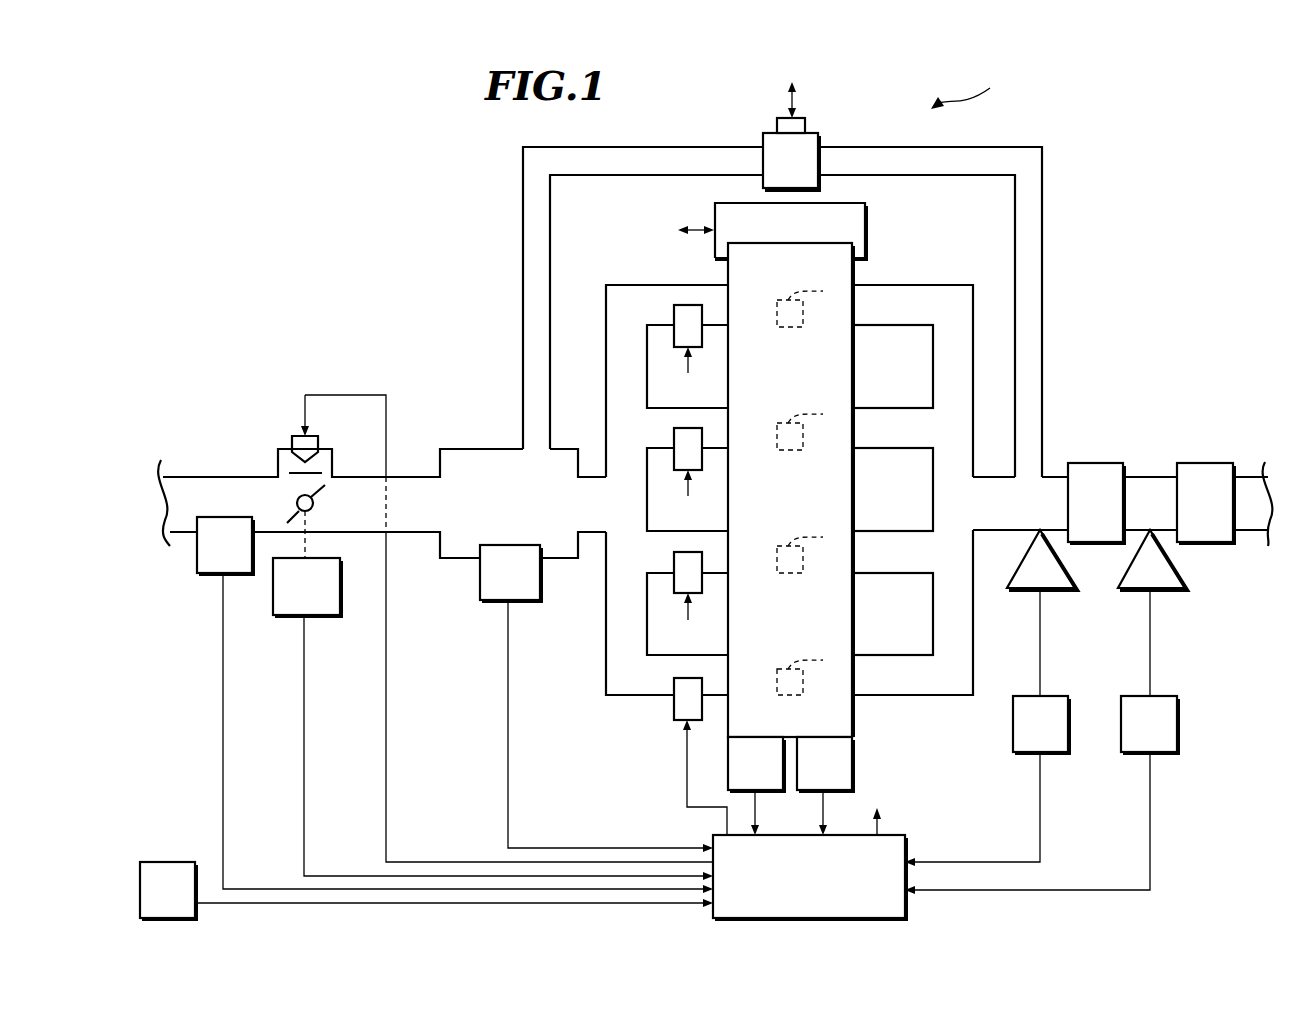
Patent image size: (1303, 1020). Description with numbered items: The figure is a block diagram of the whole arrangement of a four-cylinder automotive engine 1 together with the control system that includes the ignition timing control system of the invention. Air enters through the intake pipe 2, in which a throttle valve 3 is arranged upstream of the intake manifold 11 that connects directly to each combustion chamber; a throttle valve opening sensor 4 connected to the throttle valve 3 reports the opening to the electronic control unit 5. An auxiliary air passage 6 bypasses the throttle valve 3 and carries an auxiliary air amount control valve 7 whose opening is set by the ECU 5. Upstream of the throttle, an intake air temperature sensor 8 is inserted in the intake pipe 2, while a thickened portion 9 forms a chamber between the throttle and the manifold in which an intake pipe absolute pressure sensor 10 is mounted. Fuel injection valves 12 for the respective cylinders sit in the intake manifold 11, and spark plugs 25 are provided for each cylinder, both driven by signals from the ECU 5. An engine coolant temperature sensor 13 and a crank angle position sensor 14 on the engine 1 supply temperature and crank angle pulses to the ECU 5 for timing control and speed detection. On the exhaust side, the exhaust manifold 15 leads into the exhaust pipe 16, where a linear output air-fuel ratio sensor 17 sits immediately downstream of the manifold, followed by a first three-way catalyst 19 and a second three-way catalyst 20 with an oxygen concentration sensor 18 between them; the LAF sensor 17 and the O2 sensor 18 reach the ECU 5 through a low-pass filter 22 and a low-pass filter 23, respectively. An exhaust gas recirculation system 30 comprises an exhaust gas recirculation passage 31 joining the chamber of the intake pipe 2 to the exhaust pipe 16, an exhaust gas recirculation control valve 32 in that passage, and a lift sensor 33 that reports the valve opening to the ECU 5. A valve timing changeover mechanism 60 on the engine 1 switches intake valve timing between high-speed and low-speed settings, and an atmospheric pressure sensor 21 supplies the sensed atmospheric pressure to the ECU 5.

The engine 1 is at (853, 712).
The intake pipe 2 is at (208, 476).
The throttle valve 3 is at (320, 496).
The throttle valve opening sensor 4 is at (320, 618).
The electronic control unit 5 is at (907, 848).
The auxiliary air passage 6 is at (288, 462).
The auxiliary air amount control valve 7 is at (297, 430).
The intake air temperature sensor 8 is at (207, 576).
The thickened portion 9 is at (457, 560).
The intake pipe absolute pressure sensor 10 is at (492, 603).
The intake manifold 11 is at (633, 285).
The fuel injection valves 12 is at (674, 315).
The engine coolant temperature sensor 13 is at (728, 744).
The crank angle position sensor 14 is at (853, 750).
The exhaust manifold 15 is at (875, 285).
The exhaust pipe 16 is at (1052, 475).
The linear output air-fuel ratio sensor 17 is at (1052, 590).
The oxygen concentration sensor 18 is at (1160, 590).
The first three-way catalyst 19 is at (1103, 463).
The second three-way catalyst 20 is at (1210, 463).
The atmospheric pressure sensor 21 is at (177, 858).
The low-pass filter 22 is at (1050, 755).
The low-pass filter 23 is at (1160, 755).
The spark plugs 25 is at (803, 482).
The exhaust gas recirculation system 30 is at (973, 93).
The exhaust gas recirculation passage 31 is at (1042, 267).
The exhaust gas recirculation control valve 32 is at (820, 140).
The lift sensor 33 is at (808, 127).
The valve timing changeover mechanism 60 is at (868, 232).